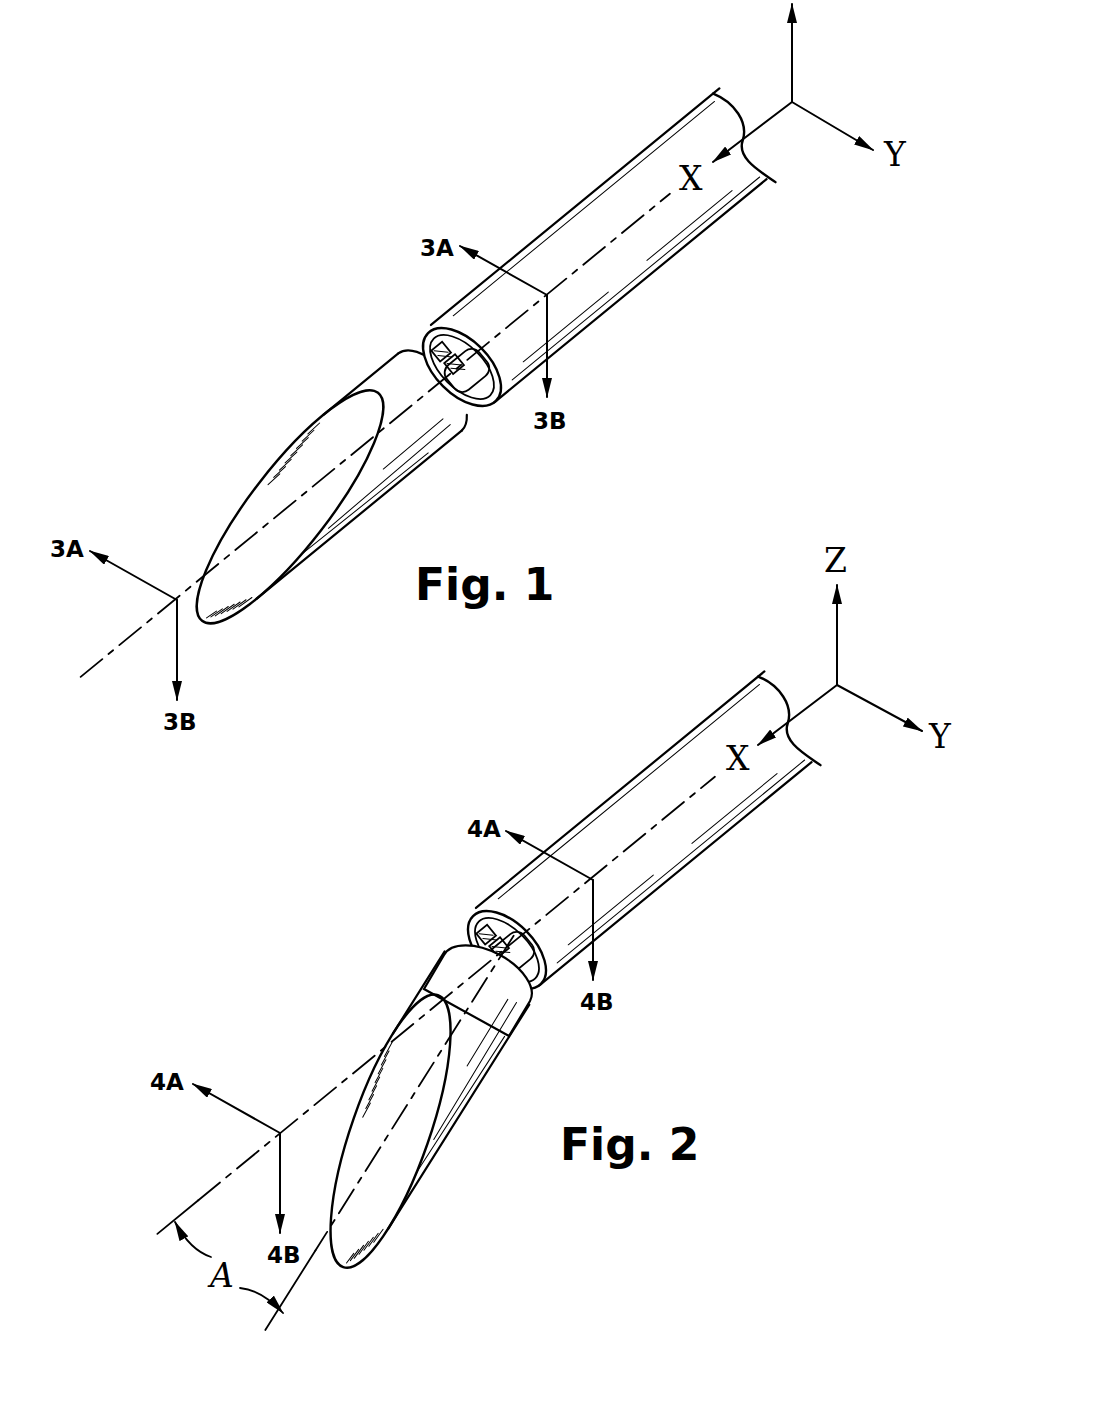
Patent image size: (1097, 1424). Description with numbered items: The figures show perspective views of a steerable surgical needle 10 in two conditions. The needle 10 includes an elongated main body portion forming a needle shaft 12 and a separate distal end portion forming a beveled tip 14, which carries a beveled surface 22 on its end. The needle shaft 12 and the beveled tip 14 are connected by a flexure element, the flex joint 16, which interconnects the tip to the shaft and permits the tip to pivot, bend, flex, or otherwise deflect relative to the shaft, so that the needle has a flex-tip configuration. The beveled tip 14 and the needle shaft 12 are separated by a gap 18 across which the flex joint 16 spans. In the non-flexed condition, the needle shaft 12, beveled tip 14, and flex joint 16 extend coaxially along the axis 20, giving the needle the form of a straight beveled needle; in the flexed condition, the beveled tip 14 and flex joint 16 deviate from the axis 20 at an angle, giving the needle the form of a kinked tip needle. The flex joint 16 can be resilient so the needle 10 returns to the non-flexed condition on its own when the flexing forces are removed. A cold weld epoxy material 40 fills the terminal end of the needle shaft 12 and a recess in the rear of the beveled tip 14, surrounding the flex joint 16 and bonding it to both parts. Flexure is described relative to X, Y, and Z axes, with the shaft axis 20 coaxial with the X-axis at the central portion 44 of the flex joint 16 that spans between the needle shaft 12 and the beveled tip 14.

In FIG. 1, the steerable surgical needle 10 is at (421, 382).
In FIG. 2, the steerable surgical needle 10 is at (481, 1019).
In FIG. 1, the needle shaft 12 is at (540, 273).
In FIG. 2, the needle shaft 12 is at (585, 853).
In FIG. 1, the beveled tip 14 is at (304, 479).
In FIG. 2, the beveled tip 14 is at (367, 1118).
In FIG. 1, the flex joint 16 is at (477, 416).
In FIG. 2, the flex joint 16 is at (553, 986).
In FIG. 1, the central portion of the flex joint 44 is at (478, 412).
In FIG. 2, the central portion of the flex joint 44 is at (540, 985).
In FIG. 1, the gap 18 is at (475, 401).
In FIG. 2, the gap 18 is at (511, 951).
In FIG. 1, the axis 20 is at (90, 663).
In FIG. 2, the axis 20 is at (183, 1207).
In FIG. 1, the beveled surface 22 is at (272, 503).
In FIG. 2, the beveled surface 22 is at (363, 1130).
In FIG. 1, the cold weld epoxy material 40 is at (440, 345).
In FIG. 2, the cold weld epoxy material 40 is at (493, 928).